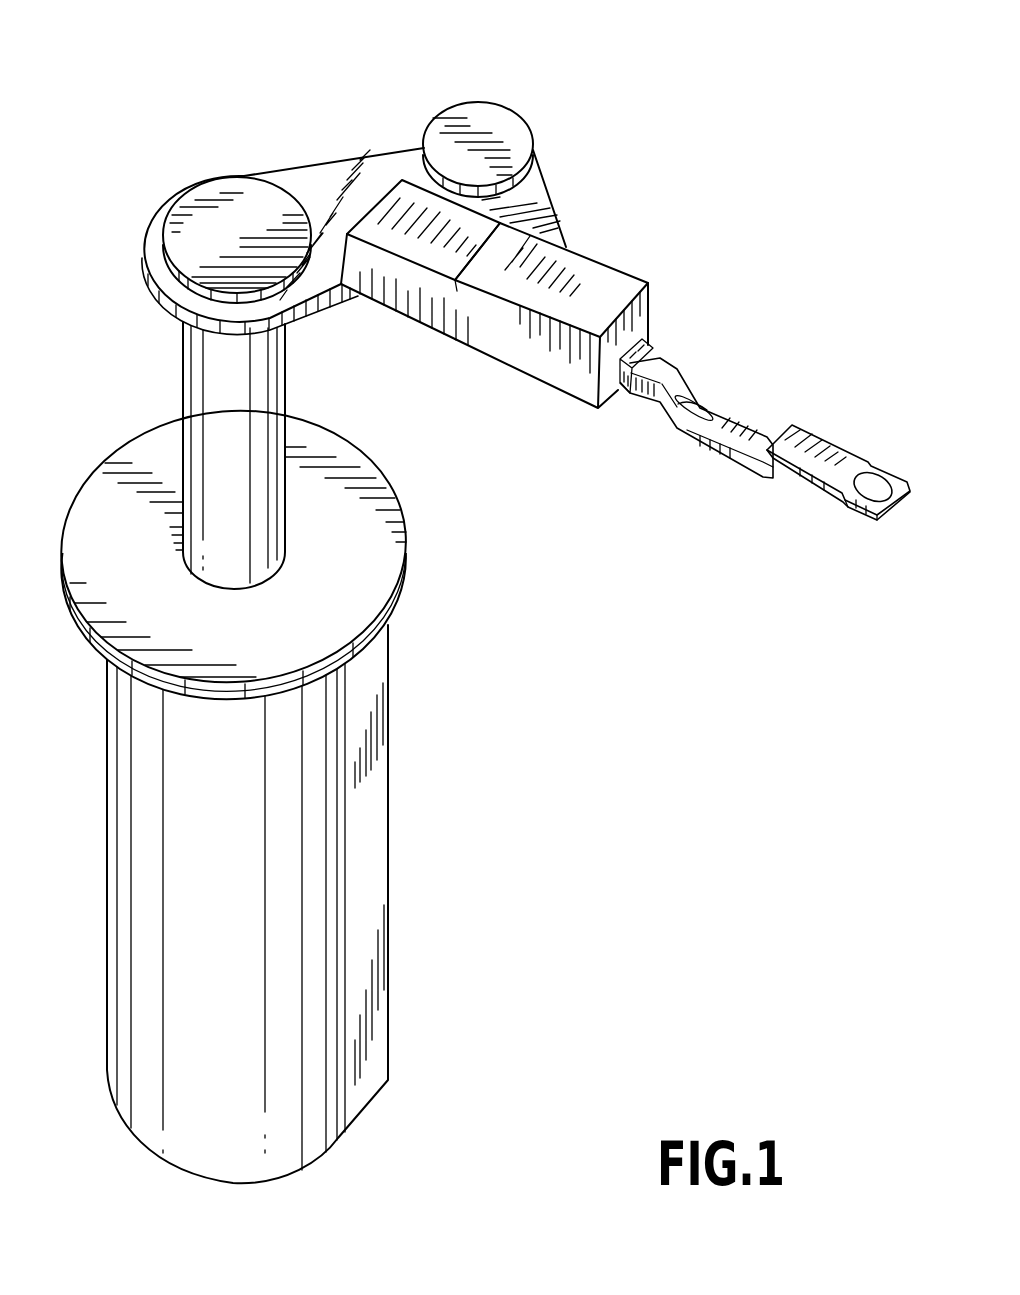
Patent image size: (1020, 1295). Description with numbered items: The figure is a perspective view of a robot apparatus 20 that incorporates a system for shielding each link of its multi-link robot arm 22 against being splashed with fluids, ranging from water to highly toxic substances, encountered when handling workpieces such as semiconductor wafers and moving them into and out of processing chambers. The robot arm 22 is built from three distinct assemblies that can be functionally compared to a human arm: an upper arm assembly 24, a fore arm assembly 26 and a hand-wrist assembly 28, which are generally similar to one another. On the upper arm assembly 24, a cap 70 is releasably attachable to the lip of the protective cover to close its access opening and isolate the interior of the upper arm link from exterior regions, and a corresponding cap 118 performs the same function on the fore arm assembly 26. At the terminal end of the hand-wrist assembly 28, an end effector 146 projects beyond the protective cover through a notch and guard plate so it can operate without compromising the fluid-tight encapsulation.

The robot apparatus 20 is at (464, 600).
The multi-link robot arm 22 is at (476, 105).
The upper arm assembly 24 is at (357, 138).
The fore arm assembly 26 is at (563, 176).
The hand-wrist assembly 28 is at (666, 273).
The cap 70 is at (207, 195).
The cap 118 is at (457, 75).
The end effector 146 is at (828, 447).